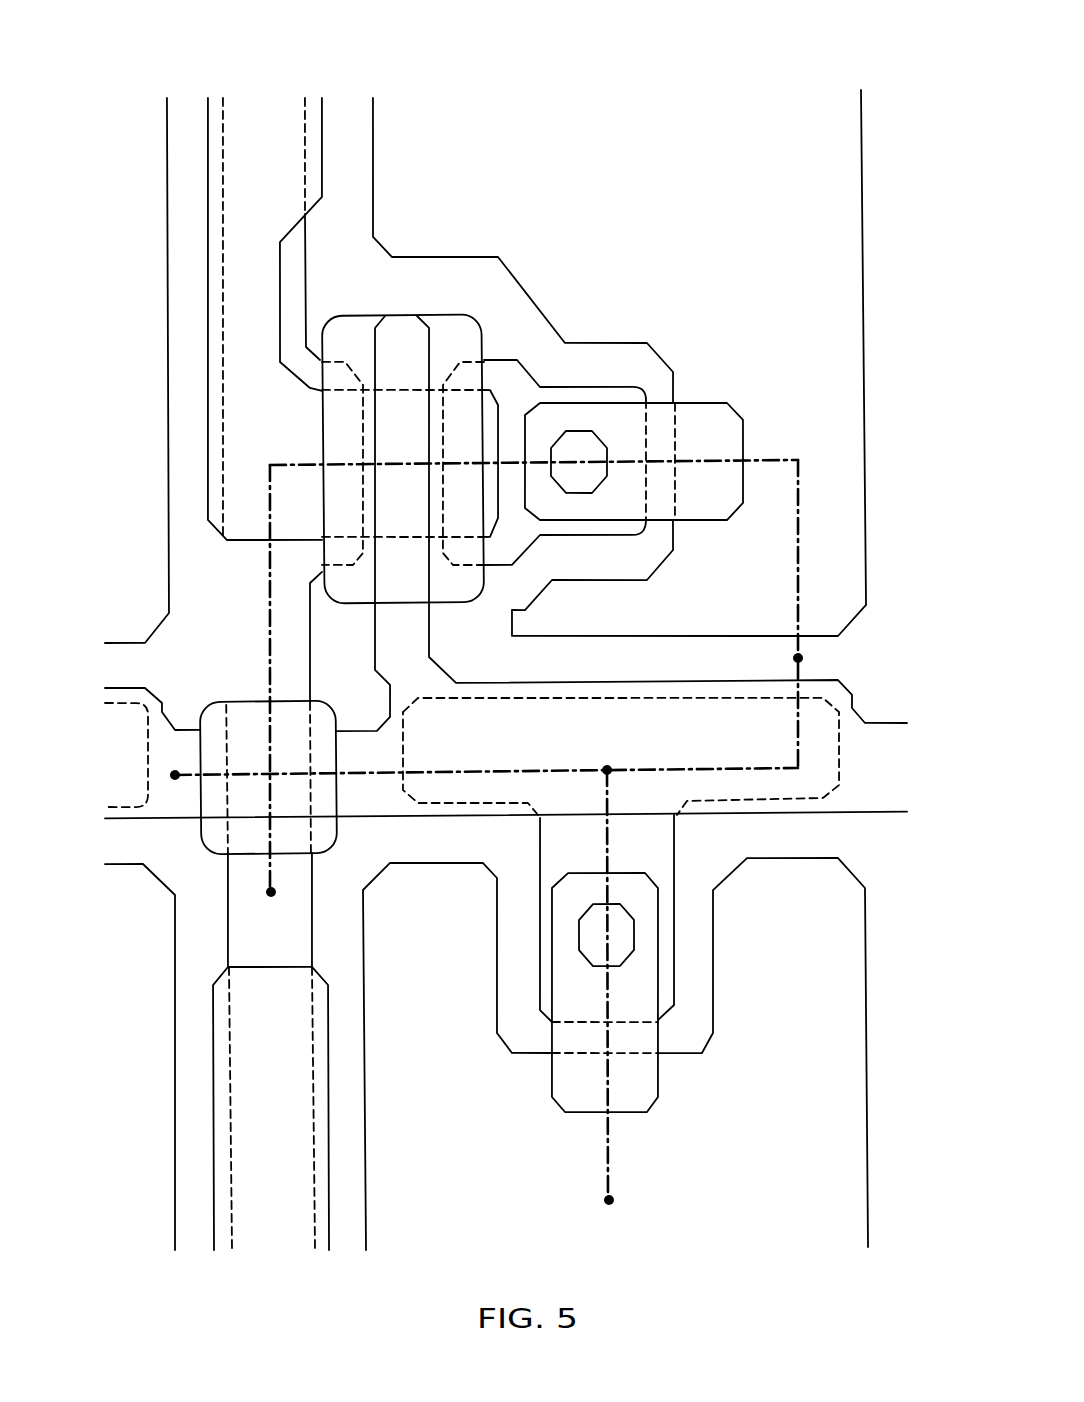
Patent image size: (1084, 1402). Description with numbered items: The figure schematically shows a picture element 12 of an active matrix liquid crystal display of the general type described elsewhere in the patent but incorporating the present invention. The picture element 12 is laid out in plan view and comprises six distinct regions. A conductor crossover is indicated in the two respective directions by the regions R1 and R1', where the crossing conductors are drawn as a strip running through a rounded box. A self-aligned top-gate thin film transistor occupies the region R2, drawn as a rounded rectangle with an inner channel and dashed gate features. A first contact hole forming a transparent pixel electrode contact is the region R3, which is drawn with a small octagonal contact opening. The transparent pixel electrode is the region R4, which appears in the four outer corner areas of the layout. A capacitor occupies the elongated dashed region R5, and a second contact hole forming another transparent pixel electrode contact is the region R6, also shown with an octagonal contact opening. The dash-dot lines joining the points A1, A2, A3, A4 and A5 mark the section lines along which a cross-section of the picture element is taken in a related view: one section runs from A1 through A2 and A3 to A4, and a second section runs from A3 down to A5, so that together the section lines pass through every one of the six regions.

The picture element 12 is at (888, 69).
The conductor crossover R1 is at (282, 977).
The conductor crossover R1' is at (286, 777).
The self-aligned TG TFT R2 is at (411, 312).
The first contact hole/transparent pixel electrode contact R3 is at (641, 444).
The transparent pixel electrode R4 is at (154, 186).
The capacitor R5 is at (508, 753).
The second contact hole/transparent pixel electrode contact R6 is at (592, 1006).
The section line point A1 is at (269, 699).
The section line point A2 is at (555, 616).
The section line point A3 is at (487, 790).
The section line point A4 is at (171, 792).
The section line point A5 is at (624, 994).